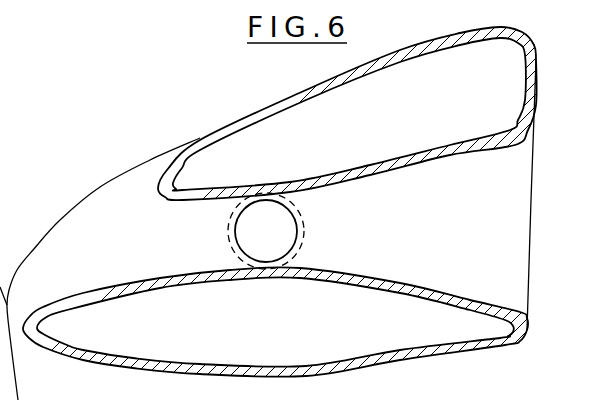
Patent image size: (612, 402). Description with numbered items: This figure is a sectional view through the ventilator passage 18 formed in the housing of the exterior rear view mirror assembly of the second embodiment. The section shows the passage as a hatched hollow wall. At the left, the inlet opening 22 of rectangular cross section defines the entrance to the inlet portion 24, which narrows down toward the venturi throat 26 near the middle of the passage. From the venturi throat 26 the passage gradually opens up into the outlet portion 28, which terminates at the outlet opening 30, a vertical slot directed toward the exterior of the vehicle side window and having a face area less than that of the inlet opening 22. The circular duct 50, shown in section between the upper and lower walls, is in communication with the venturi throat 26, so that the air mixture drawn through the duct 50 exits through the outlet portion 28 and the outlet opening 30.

The ventilator passage 18 is at (137, 208).
The inlet opening 22 is at (58, 223).
The inlet portion 24 is at (123, 264).
The venturi throat 26 is at (360, 250).
The outlet portion 28 is at (497, 238).
The outlet opening 30 is at (528, 262).
The duct 50 is at (240, 235).